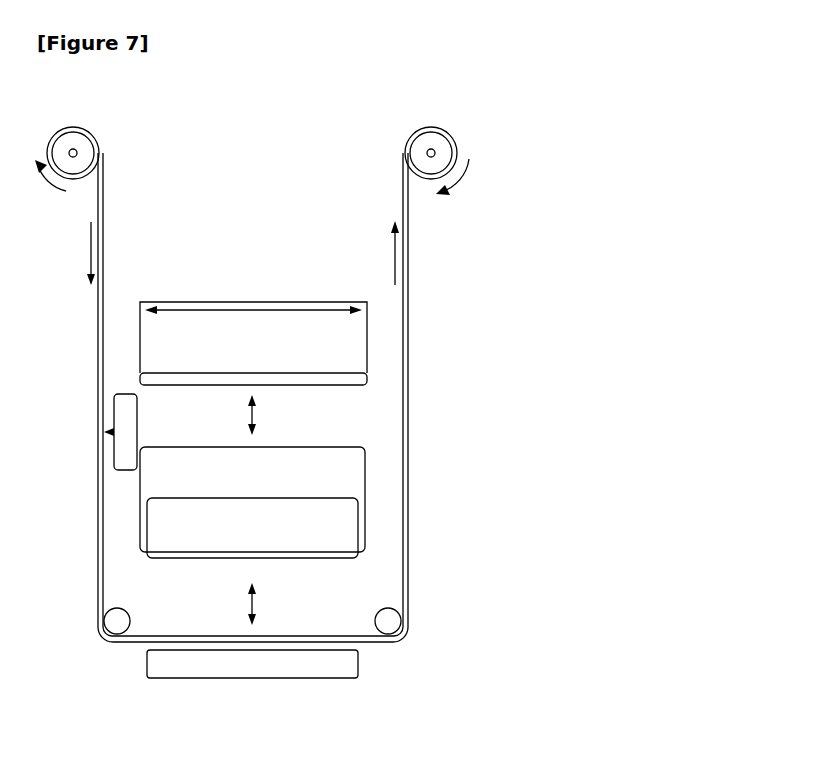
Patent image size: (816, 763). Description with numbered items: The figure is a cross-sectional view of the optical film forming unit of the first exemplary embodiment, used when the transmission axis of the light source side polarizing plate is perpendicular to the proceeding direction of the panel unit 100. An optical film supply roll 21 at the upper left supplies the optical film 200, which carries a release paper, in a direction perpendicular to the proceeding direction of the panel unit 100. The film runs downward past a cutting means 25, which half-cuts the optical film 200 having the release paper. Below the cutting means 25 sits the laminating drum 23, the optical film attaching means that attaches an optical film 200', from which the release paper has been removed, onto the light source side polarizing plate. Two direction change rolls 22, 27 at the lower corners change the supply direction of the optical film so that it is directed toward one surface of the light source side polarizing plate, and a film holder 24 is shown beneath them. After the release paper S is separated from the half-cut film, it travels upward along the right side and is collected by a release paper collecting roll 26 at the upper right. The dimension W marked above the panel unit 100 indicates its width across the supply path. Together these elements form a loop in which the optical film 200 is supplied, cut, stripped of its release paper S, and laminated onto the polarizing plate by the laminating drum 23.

The optical film supply roll 21 is at (75, 126).
The release paper collecting roll 26 is at (430, 126).
The direction change roll 22 is at (126, 607).
The direction change roll 27 is at (378, 607).
The laminating drum 23 is at (328, 447).
The film holder 24 is at (300, 679).
The cutting means 25 is at (138, 416).
The panel unit 100 is at (183, 372).
The optical film 200 is at (224, 397).
The optical film 200' is at (310, 528).
The release paper S is at (409, 313).
The width W is at (253, 300).